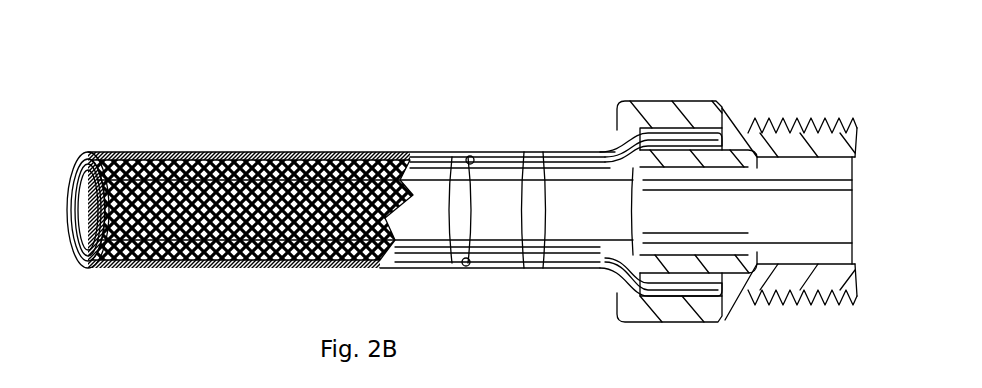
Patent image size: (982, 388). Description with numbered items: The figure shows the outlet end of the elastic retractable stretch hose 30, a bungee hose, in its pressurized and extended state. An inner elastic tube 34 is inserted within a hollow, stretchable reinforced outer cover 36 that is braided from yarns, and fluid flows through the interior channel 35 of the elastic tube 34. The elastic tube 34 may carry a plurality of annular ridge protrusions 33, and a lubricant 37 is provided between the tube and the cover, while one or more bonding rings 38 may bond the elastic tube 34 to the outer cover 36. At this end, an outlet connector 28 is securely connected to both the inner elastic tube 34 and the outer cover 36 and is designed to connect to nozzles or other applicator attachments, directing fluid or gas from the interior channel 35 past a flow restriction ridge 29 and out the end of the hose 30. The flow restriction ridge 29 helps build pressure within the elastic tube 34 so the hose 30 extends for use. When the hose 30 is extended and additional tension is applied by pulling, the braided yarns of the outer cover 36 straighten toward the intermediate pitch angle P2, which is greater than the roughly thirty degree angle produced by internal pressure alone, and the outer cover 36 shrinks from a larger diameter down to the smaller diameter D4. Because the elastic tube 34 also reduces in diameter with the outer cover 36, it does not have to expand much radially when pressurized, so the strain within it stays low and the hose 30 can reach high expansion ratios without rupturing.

The outlet connector 28 is at (794, 303).
The flow restriction ridge 29 is at (633, 223).
The elastic retractable stretch hose 30 is at (497, 122).
The annular ridge protrusions 33 is at (461, 156).
The inner elastic tube 34 is at (68, 165).
The interior channel 35 is at (400, 278).
The stretchable reinforced outer cover 36 is at (87, 153).
The lubricant 37 is at (80, 160).
The bonding rings 38 is at (283, 270).
The smaller diameter D4 is at (179, 280).
The intermediate pitch angle P2 is at (217, 118).